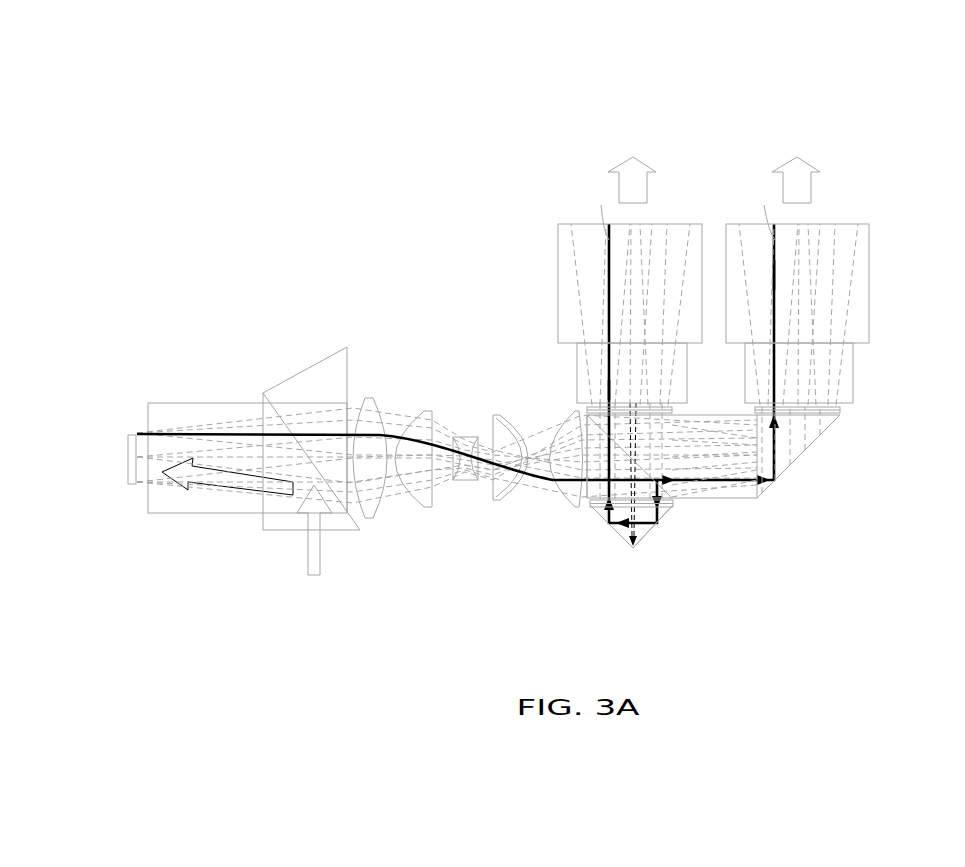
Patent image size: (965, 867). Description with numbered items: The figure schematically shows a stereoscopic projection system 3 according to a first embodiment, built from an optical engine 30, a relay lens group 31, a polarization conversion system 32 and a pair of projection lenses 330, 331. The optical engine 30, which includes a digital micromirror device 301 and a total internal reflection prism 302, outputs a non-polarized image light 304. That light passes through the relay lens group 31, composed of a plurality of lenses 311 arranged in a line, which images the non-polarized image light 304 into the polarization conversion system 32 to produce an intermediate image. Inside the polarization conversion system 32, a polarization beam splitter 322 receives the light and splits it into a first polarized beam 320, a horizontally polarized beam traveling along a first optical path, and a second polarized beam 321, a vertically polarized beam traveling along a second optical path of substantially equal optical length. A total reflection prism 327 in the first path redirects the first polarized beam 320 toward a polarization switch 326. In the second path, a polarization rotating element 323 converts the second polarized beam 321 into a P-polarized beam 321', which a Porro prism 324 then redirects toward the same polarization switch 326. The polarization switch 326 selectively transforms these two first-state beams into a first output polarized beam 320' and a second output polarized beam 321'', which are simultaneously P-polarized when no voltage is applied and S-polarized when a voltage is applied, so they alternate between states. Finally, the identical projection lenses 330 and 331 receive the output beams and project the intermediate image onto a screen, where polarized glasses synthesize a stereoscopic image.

The stereoscopic projection system 3 is at (934, 110).
The optical engine 30 is at (205, 258).
The digital micromirror device 301 is at (146, 432).
The total internal reflection prism 302 is at (308, 370).
The non-polarized image light 304 is at (360, 403).
The relay lens group 31 is at (525, 388).
The lenses 311 is at (565, 507).
The polarization conversion system 32 is at (826, 491).
The first polarized beam 320 is at (677, 465).
The first output polarized beam 320' is at (843, 360).
The second polarized beam 321 is at (653, 528).
The P-polarized beam 321' is at (631, 570).
The second output polarized beam 321'' is at (557, 288).
The polarization beam splitter 322 is at (596, 495).
The polarization rotating element 323 is at (673, 508).
The Porro prism 324 is at (645, 530).
The polarization switch 326 is at (673, 410).
The total reflection prism 327 is at (800, 460).
The projection lens 330 is at (840, 224).
The projection lens 331 is at (675, 224).